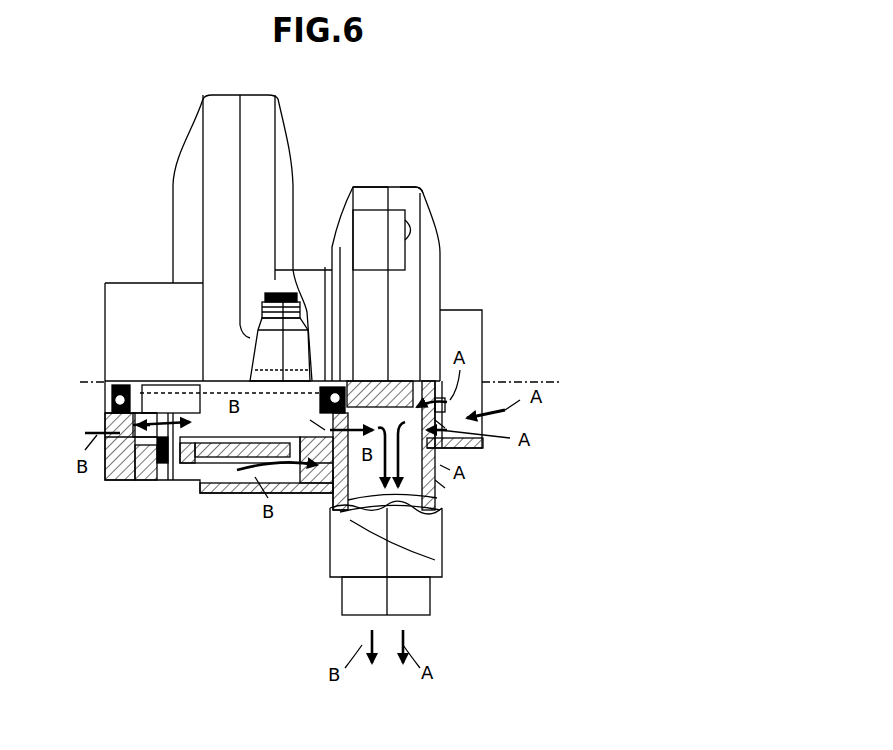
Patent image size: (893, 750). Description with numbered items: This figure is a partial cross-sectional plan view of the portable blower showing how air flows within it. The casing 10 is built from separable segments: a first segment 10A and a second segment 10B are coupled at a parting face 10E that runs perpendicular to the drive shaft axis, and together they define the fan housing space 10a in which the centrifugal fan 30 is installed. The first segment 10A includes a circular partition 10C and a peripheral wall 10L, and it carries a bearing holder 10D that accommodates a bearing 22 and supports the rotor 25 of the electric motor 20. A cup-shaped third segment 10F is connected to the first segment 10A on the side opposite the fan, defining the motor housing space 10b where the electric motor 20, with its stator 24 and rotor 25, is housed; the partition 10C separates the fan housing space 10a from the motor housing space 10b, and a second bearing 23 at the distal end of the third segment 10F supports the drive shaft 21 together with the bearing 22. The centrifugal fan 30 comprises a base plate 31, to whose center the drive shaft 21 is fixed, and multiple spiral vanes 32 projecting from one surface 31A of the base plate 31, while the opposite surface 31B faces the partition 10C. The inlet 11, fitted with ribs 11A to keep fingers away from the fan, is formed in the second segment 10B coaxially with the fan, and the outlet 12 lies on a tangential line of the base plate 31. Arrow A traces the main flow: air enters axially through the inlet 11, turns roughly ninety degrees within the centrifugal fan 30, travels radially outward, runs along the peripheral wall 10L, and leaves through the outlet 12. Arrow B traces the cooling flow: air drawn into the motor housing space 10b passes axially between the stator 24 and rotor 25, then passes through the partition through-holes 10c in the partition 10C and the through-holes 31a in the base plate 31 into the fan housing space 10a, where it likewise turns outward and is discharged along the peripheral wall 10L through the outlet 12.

The casing 10 is at (432, 200).
The first segment 10A is at (372, 183).
The second segment 10B is at (407, 186).
The circular partition 10C is at (330, 470).
The bearing holder 10D is at (323, 410).
The parting face 10E is at (388, 187).
The third segment 10F is at (217, 493).
The peripheral wall 10L is at (402, 282).
The fan housing space 10a is at (440, 455).
The motor housing space 10b is at (300, 485).
The partition through-holes 10c is at (335, 440).
The inlet 11 is at (485, 315).
The ribs 11A is at (440, 410).
The outlet 12 is at (430, 615).
The electric motor 20 is at (303, 483).
The drive shaft 21 is at (407, 380).
The bearing 22 is at (328, 267).
The bearing 23 is at (102, 403).
The stator 24 is at (235, 481).
The rotor 25 is at (253, 473).
The centrifugal fan 30 is at (440, 495).
The base plate 31 is at (387, 523).
The one surface 31A is at (400, 505).
The opposite surface 31B is at (338, 512).
The through-holes 31a is at (445, 425).
The spiral vanes 32 is at (440, 485).